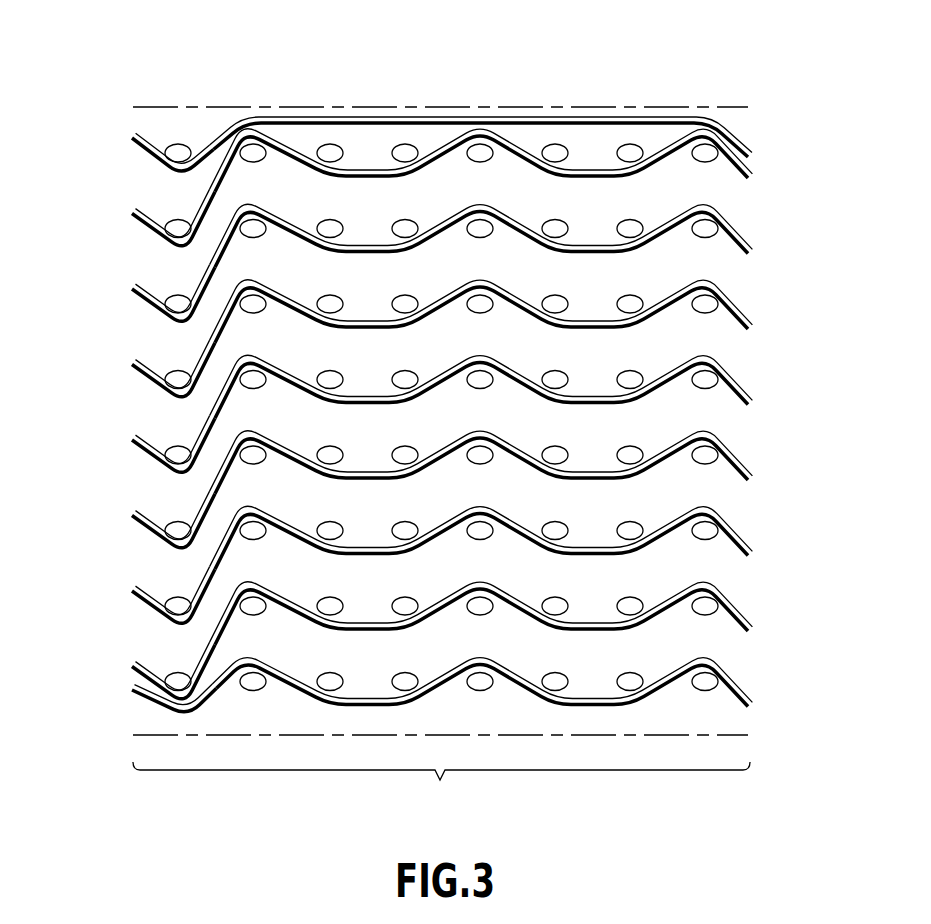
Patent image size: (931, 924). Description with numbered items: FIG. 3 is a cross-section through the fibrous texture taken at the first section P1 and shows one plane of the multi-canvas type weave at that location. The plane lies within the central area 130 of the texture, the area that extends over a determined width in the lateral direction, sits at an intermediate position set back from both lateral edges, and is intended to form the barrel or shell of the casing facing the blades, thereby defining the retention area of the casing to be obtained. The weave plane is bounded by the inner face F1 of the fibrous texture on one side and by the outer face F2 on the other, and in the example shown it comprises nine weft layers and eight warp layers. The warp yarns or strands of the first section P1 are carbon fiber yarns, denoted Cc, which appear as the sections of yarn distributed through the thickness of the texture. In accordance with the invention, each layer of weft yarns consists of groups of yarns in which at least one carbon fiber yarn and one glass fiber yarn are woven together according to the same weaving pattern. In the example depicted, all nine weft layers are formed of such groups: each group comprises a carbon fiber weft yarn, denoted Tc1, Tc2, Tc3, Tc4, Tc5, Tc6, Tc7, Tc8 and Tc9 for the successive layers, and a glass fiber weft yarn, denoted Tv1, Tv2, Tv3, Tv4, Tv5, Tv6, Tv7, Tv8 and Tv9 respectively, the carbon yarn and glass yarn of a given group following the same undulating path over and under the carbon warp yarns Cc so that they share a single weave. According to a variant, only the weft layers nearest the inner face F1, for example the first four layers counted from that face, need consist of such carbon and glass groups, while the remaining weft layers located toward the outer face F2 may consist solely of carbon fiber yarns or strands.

The glass fiber yarn or strand Tv1 is at (130, 139).
The glass fiber yarn or strand Tv2 is at (130, 214).
The glass fiber yarn or strand Tv3 is at (130, 290).
The glass fiber yarn or strand Tv4 is at (130, 366).
The glass fiber yarn or strand Tv5 is at (130, 441).
The glass fiber yarn or strand Tv6 is at (130, 516).
The glass fiber yarn or strand Tv7 is at (130, 592).
The glass fiber yarn or strand Tv8 is at (130, 668).
The glass fiber yarn or strand Tv9 is at (130, 691).
The carbon fiber yarn or strand Tc1 is at (751, 152).
The carbon fiber yarn or strand Tc2 is at (751, 177).
The carbon fiber yarn or strand Tc3 is at (751, 252).
The carbon fiber yarn or strand Tc4 is at (751, 328).
The carbon fiber yarn or strand Tc5 is at (751, 404).
The carbon fiber yarn or strand Tc6 is at (751, 479).
The carbon fiber yarn or strand Tc7 is at (751, 554).
The carbon fiber yarn or strand Tc8 is at (751, 630).
The carbon fiber yarn or strand Tc9 is at (751, 706).
The carbon fiber warp yarns or strands Cc is at (333, 224).
The inner face F1 is at (748, 737).
The outer face F2 is at (714, 105).
The first section P1 is at (230, 75).
The central area 130 is at (441, 786).